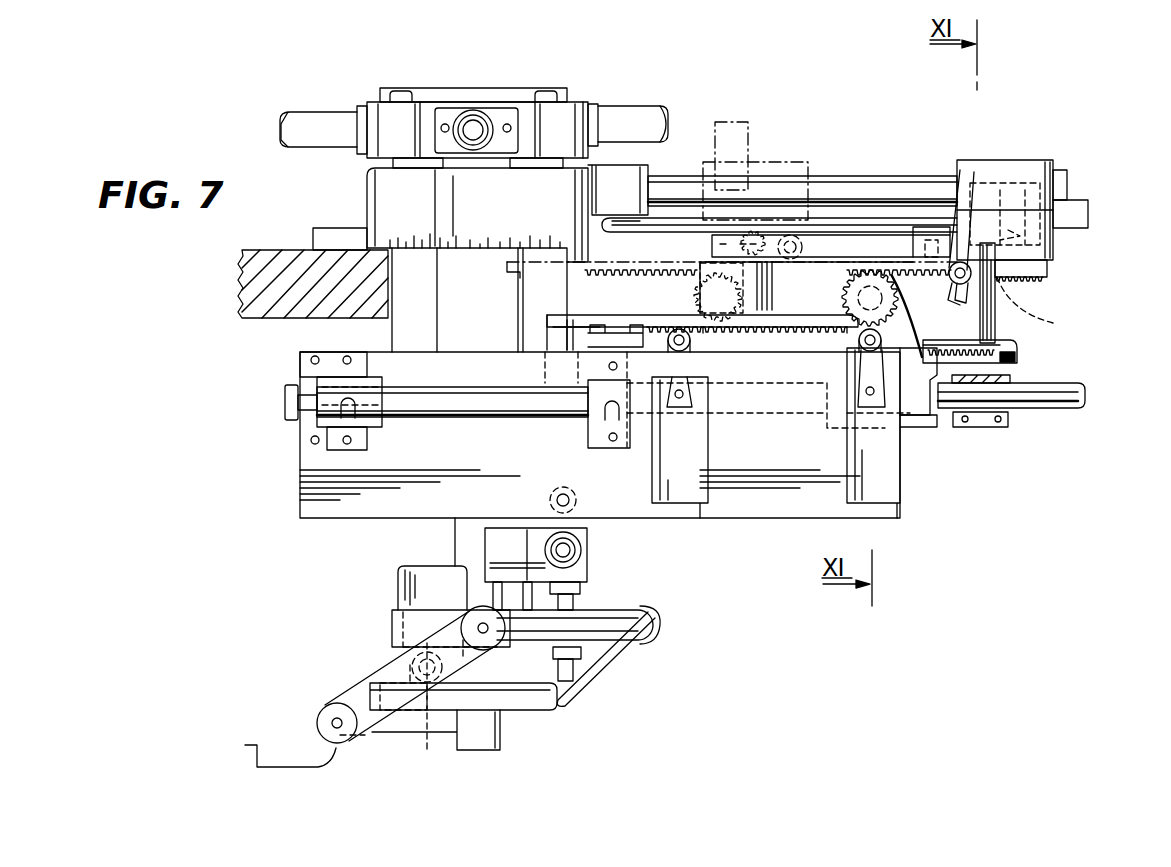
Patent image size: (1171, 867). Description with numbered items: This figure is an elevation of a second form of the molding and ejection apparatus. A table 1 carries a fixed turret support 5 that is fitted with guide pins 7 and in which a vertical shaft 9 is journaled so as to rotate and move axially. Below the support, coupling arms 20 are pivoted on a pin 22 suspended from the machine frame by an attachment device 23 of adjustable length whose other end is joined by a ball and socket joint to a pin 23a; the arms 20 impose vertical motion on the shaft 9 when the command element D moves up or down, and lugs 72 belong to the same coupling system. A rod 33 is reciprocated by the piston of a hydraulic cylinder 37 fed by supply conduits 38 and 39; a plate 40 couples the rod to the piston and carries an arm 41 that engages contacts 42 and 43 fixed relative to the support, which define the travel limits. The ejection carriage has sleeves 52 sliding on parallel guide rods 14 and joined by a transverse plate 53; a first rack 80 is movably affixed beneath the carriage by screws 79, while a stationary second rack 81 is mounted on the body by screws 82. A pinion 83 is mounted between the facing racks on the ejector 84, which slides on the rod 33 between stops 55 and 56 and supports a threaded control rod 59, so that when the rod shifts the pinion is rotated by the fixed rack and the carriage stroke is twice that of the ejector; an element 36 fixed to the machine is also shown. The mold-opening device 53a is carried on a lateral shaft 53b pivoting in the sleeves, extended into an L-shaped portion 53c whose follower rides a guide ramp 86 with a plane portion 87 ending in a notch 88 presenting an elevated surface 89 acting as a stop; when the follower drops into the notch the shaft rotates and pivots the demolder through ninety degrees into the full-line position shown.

The table 1 is at (250, 297).
The fixed turret support 5 is at (367, 186).
The guide pins 7 is at (402, 92).
The vertical shaft 9 is at (455, 533).
The guide rods 14 is at (905, 178).
The arms 20 is at (365, 678).
The pin 22 is at (642, 620).
The attachment device 23 is at (575, 586).
The pin 23a is at (576, 496).
The shaft 33 is at (1068, 400).
The element fixed to the machine 36 is at (775, 503).
The hydraulic cylinder 37 is at (418, 405).
The supply conduit 38 is at (340, 412).
The supply conduit 39 is at (600, 420).
The plate 40 is at (285, 403).
The arm 41 is at (665, 318).
The contact 42 is at (868, 372).
The contact 43 is at (692, 362).
The sleeves 52 is at (1018, 165).
The transverse plate 53 is at (906, 236).
The mold-opening device 53a is at (1090, 212).
The lateral shaft 53b is at (975, 178).
The L-shaped portion 53c is at (990, 240).
The stop 55 is at (825, 416).
The stop 56 is at (955, 426).
The threaded control rod 59 is at (1020, 356).
The lugs 72 is at (436, 739).
The screws 79 is at (1032, 282).
The first rack 80 is at (1050, 266).
The second rack 81 is at (764, 346).
The screws 82 is at (600, 320).
The pinion 83 is at (845, 293).
The ejector 84 is at (915, 427).
The guide ramp 86 is at (757, 254).
The plane portion 87 is at (830, 258).
The notch 88 is at (958, 295).
The elevated surface 89 is at (1058, 318).
The command element D is at (252, 745).